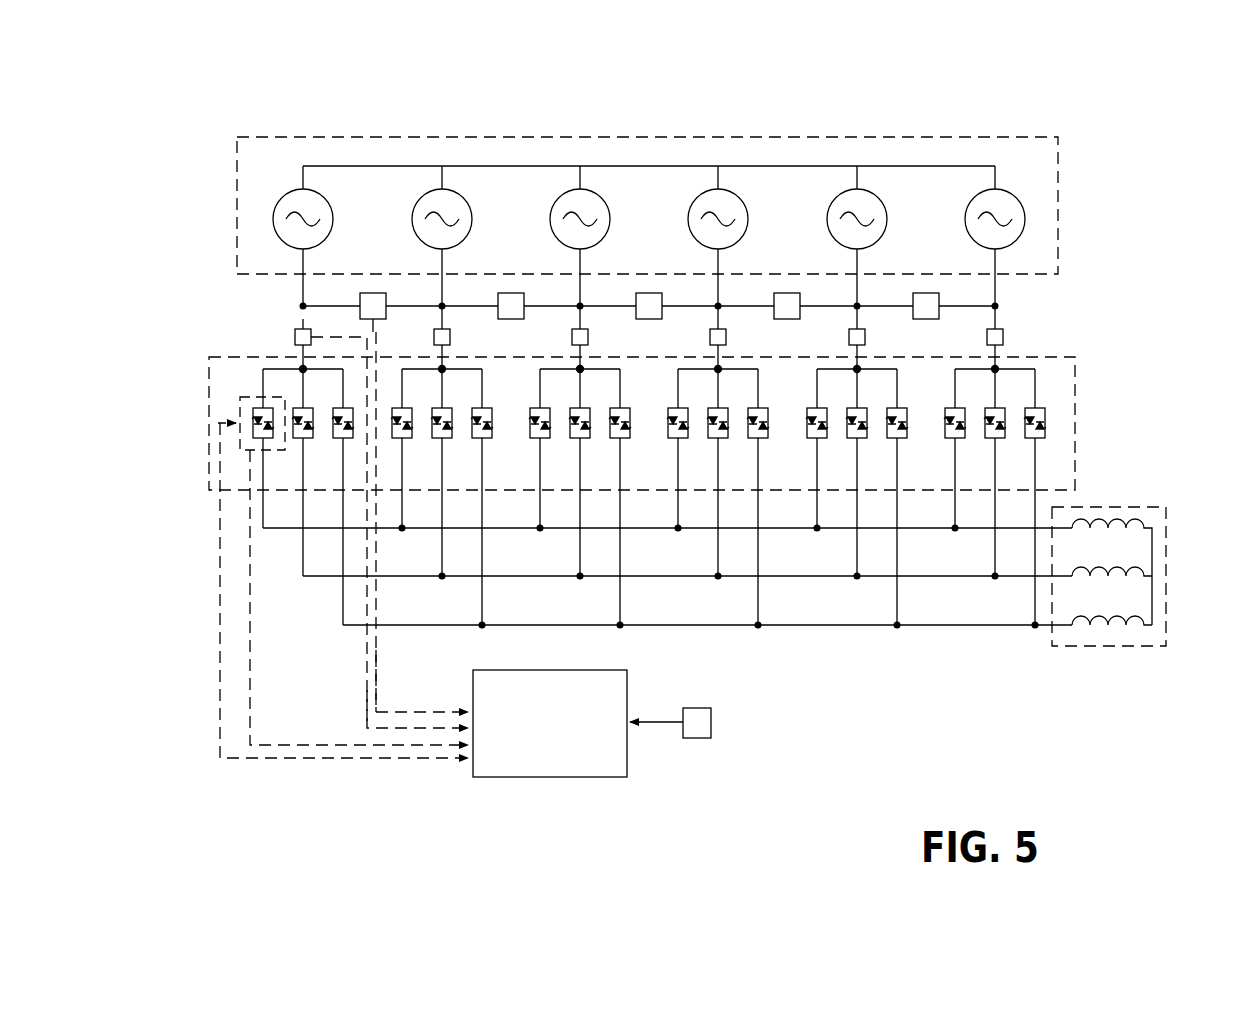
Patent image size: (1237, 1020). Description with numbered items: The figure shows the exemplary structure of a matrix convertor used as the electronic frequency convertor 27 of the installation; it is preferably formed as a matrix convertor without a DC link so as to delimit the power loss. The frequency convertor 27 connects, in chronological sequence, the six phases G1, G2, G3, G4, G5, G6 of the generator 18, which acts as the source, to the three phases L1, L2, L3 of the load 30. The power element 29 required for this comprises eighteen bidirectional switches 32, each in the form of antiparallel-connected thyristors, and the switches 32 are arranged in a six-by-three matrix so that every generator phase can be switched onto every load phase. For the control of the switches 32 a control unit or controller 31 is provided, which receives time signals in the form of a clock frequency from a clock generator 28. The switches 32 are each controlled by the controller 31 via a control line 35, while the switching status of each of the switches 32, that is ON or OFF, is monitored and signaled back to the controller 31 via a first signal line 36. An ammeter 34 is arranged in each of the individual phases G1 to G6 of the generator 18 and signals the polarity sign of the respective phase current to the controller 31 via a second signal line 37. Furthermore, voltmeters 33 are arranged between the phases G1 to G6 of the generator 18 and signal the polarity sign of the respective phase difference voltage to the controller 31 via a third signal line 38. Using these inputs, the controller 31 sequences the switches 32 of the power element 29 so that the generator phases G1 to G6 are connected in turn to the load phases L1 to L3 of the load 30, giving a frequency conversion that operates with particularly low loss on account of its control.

The generator 18 is at (1058, 212).
The electronic frequency convertor 27 is at (1113, 337).
The clock generator 28 is at (698, 732).
The power element 29 is at (1078, 420).
The load 30 is at (1062, 648).
The controller 31 is at (550, 723).
The bidirectional switch 32 is at (250, 398).
The voltmeter 33 is at (373, 293).
The ammeter 34 is at (295, 337).
The control line 35 is at (222, 695).
The first signal line 36 is at (253, 715).
The second signal line 37 is at (367, 695).
The third signal line 38 is at (377, 655).
The generator phase G1 is at (298, 194).
The generator phase G2 is at (437, 194).
The generator phase G3 is at (575, 194).
The generator phase G4 is at (713, 194).
The generator phase G5 is at (852, 194).
The generator phase G6 is at (990, 194).
The load phase L1 is at (1115, 527).
The load phase L2 is at (1115, 578).
The load phase L3 is at (1115, 630).